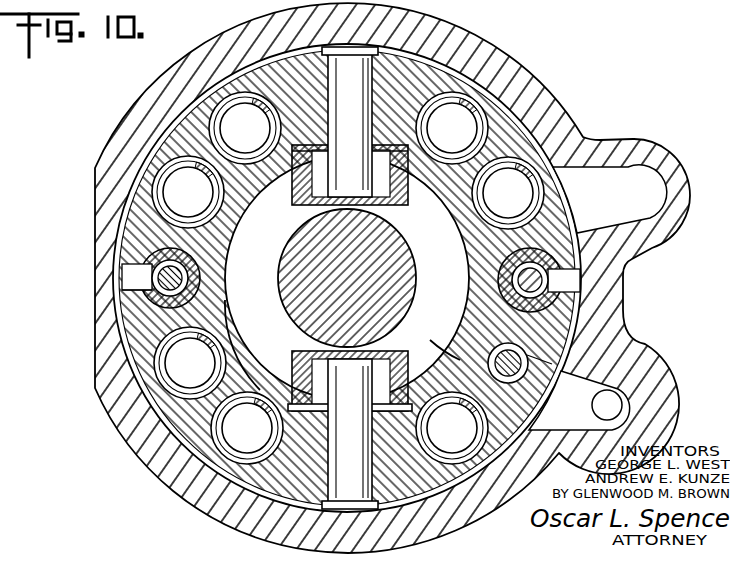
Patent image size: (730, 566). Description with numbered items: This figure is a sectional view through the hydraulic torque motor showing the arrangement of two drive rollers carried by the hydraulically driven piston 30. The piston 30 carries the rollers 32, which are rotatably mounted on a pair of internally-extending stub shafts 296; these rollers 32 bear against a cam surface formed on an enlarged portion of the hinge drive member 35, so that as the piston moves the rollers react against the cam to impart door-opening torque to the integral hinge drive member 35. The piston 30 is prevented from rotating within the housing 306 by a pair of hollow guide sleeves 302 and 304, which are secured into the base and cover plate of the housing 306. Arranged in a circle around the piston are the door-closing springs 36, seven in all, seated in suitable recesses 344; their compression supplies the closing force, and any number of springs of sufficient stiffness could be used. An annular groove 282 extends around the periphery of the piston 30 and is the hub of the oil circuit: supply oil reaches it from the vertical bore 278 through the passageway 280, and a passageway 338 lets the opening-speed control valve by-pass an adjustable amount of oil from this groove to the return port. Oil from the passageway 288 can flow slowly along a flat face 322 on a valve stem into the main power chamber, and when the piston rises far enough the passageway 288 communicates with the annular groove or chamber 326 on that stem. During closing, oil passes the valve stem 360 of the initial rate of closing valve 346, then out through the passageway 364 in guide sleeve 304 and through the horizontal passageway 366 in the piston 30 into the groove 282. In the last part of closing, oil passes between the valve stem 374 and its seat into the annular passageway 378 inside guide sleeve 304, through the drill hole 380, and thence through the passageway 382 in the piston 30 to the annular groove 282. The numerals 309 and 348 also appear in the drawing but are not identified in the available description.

The piston 30 is at (568, 187).
The rollers 32 is at (300, 162).
The hinge drive member 35 is at (307, 238).
The door-closing springs 36 is at (262, 100).
The vertical bore 278 is at (621, 409).
The passageway 280 is at (587, 388).
The annular groove 282 is at (115, 255).
The passageway 288 is at (533, 385).
The stub shafts 296 is at (347, 87).
The hollow guide sleeve 302 is at (185, 295).
The hollow guide sleeve 304 is at (485, 250).
The housing 306 is at (168, 97).
The port 309 is at (470, 340).
The flat face 322 is at (493, 366).
The annular groove or chamber 326 is at (480, 410).
The passageway 338 is at (640, 203).
The recesses 344 is at (243, 375).
The initial rate of closing valve 346 is at (265, 286).
The valve core 348 is at (494, 278).
The valve stem 360 is at (183, 262).
The passageway 364 is at (147, 300).
The horizontal passageway 366 is at (130, 265).
The valve stem 374 is at (490, 346).
The annular passageway 378 is at (529, 254).
The drill hole 380 is at (542, 298).
The passageway 382 is at (577, 277).